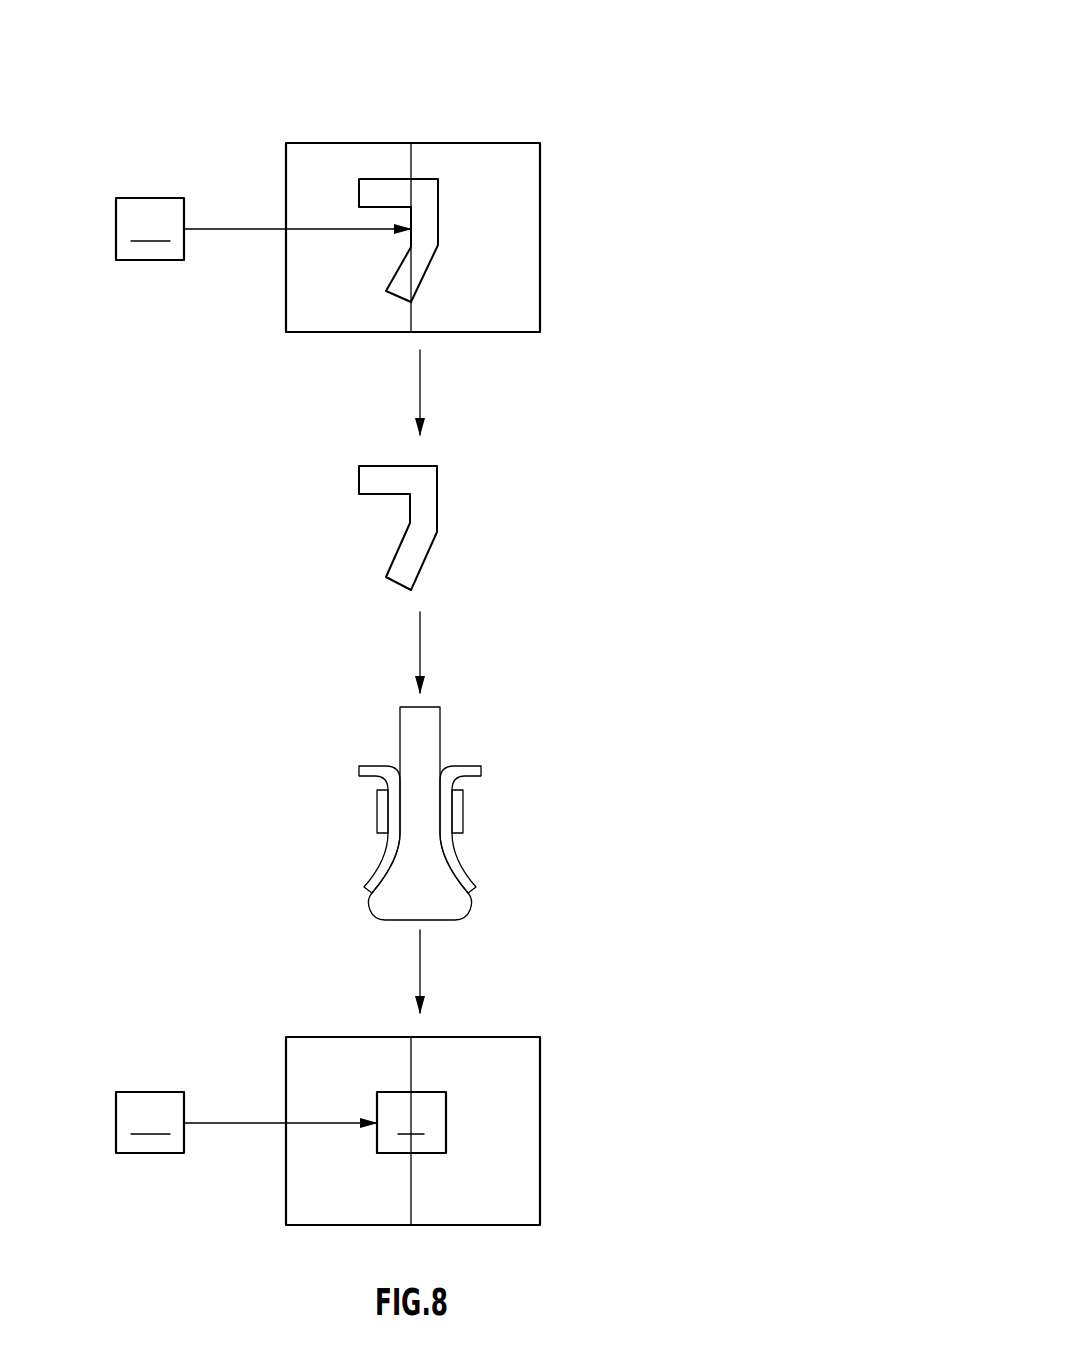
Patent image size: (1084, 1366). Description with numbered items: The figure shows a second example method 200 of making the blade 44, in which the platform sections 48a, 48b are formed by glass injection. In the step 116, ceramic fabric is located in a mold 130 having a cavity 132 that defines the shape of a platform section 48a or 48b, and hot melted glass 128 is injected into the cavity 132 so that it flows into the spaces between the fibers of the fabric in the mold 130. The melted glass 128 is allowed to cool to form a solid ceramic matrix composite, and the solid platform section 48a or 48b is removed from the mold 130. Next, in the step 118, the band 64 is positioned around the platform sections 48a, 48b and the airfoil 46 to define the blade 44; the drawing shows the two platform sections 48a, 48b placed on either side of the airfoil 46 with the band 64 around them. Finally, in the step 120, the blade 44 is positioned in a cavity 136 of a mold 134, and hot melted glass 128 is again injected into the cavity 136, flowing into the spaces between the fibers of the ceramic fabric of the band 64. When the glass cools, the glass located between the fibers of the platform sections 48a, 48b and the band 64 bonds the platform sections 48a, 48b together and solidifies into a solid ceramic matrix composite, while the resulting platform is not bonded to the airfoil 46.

The second example method 200 is at (666, 51).
The mold 130 is at (528, 127).
The cavity 132 is at (380, 193).
The hot melted glass 128 is at (263, 675).
The step 116 is at (579, 263).
The platform section 48a is at (474, 493).
The platform section 48b is at (462, 768).
The blade 44 is at (586, 687).
The airfoil 46 is at (430, 725).
The band 64 is at (462, 812).
The step 118 is at (580, 782).
The mold 134 is at (586, 993).
The step 120 is at (579, 1110).
The cavity 136 is at (447, 1112).